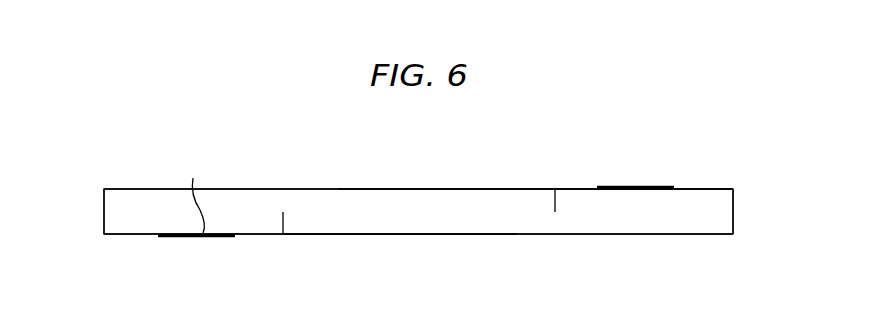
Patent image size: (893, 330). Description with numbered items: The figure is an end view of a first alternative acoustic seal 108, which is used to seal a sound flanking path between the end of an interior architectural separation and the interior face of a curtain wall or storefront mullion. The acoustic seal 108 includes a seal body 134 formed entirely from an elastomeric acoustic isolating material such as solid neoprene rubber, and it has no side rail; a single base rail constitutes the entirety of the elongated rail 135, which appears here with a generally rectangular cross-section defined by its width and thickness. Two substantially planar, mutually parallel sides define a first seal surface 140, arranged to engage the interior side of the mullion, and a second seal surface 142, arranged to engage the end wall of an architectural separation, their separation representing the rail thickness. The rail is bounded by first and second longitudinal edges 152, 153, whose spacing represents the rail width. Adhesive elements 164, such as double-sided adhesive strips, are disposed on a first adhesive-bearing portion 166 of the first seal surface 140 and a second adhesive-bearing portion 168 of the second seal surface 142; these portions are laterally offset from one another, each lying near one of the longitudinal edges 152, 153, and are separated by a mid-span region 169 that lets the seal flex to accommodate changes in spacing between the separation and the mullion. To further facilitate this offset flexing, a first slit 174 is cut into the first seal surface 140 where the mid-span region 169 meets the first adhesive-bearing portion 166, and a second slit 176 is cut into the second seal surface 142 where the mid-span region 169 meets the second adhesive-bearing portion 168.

The first alternative acoustic seal 108 is at (157, 146).
The seal body 134 is at (432, 189).
The elongated rail 135 is at (733, 189).
The first seal surface 140 is at (338, 188).
The second seal surface 142 is at (517, 235).
The first longitudinal edge 152 is at (733, 217).
The second longitudinal edge 153 is at (104, 213).
The adhesive elements 164 is at (173, 237).
The first adhesive-bearing portion 166 is at (650, 190).
The second adhesive-bearing portion 168 is at (195, 194).
The mid-span region 169 is at (390, 234).
The first slit 174 is at (555, 190).
The second slit 176 is at (283, 235).